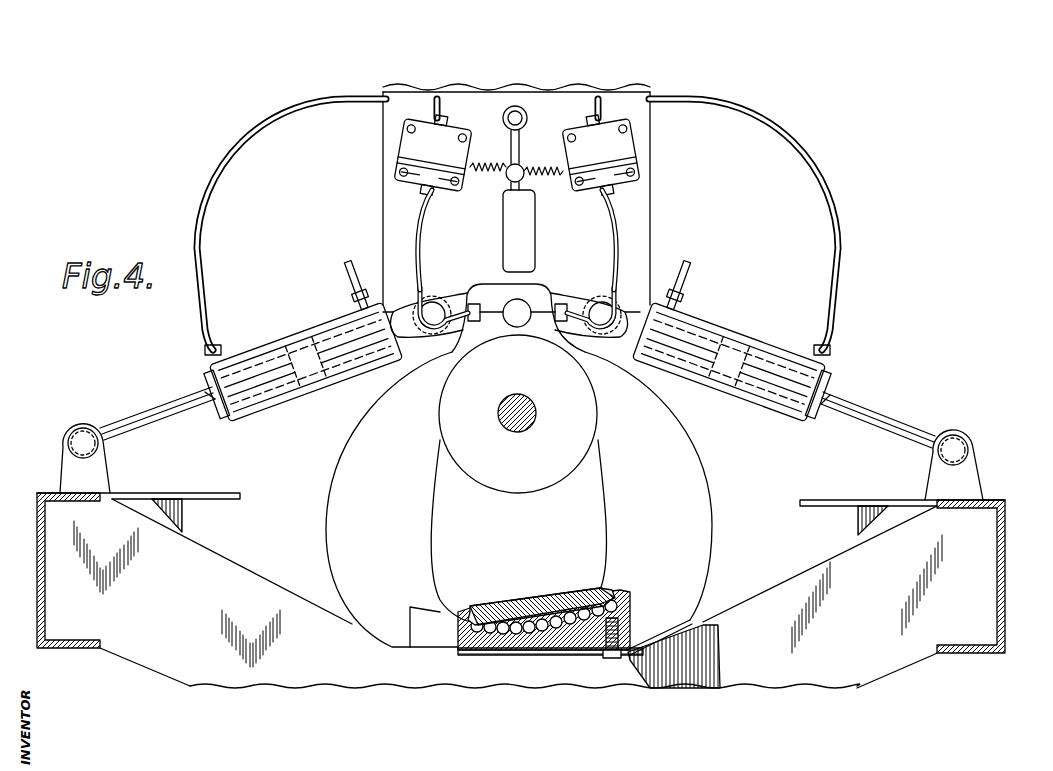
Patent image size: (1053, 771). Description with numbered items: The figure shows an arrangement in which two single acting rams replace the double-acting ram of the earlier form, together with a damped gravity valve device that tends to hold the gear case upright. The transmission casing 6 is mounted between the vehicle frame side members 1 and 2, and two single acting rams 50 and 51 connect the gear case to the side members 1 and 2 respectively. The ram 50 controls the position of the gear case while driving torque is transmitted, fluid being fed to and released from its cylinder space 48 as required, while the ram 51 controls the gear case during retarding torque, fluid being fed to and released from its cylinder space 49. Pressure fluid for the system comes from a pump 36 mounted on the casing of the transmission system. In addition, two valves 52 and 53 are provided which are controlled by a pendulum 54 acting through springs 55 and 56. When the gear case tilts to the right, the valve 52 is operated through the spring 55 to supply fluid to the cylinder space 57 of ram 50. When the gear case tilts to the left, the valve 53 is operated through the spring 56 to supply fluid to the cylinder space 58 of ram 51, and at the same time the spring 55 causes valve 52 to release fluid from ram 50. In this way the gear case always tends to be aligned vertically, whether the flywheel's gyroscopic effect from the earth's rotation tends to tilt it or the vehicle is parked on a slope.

The side member 1 is at (1005, 592).
The side member 2 is at (37, 568).
The casing 6 is at (583, 500).
The pump 36 is at (525, 305).
The cylinder space 48 is at (698, 384).
The cylinder space 49 is at (355, 358).
The single acting ram 50 is at (743, 335).
The single acting ram 51 is at (290, 332).
The valve 52 is at (620, 152).
The valve 53 is at (410, 145).
The pendulum 54 is at (520, 240).
The spring 55 is at (546, 165).
The spring 56 is at (489, 165).
The cylinder space 57 is at (763, 411).
The cylinder space 58 is at (273, 393).